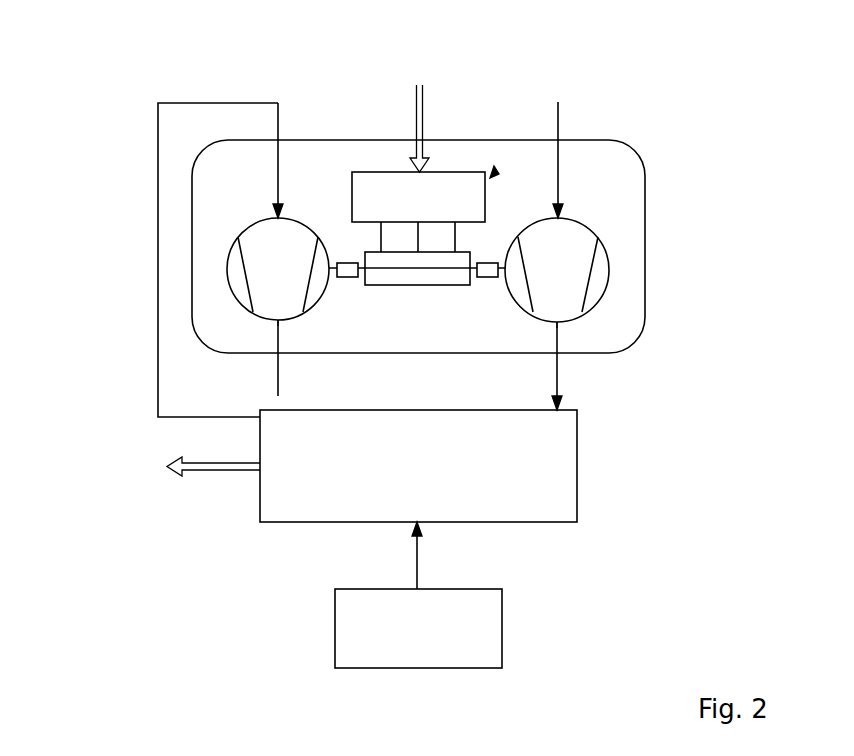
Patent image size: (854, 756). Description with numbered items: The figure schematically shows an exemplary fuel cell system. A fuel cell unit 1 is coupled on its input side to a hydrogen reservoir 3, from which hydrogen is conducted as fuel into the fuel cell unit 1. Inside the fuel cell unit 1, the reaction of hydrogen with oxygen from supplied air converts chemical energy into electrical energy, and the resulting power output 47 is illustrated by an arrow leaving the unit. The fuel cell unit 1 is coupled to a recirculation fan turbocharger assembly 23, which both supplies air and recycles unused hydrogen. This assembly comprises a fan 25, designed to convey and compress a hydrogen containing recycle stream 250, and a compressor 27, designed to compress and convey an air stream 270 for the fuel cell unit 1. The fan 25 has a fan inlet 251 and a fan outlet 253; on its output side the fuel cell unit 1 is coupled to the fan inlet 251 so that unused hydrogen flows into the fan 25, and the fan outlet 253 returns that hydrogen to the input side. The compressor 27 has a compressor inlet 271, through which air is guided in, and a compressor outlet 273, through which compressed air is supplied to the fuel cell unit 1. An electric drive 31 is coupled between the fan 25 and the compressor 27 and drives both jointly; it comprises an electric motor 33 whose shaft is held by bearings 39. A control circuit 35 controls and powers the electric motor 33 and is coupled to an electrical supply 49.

The fuel cell unit 1 is at (577, 465).
The hydrogen reservoir 3 is at (502, 627).
The recirculation fan turbocharger assembly 23 is at (645, 210).
The fan 25 is at (228, 280).
The compressor 27 is at (602, 245).
The electric drive 31 is at (493, 170).
The electric motor 33 is at (418, 286).
The control circuit 35 is at (377, 172).
The bearings 39 is at (341, 262).
The power output 47 is at (200, 475).
The electrical supply 49 is at (418, 85).
The hydrogen containing recycle stream 250 is at (278, 125).
The fan inlet 251 is at (274, 214).
The fan outlet 253 is at (272, 321).
The air stream 270 is at (560, 385).
The compressor inlet 271 is at (563, 216).
The compressor outlet 273 is at (565, 322).